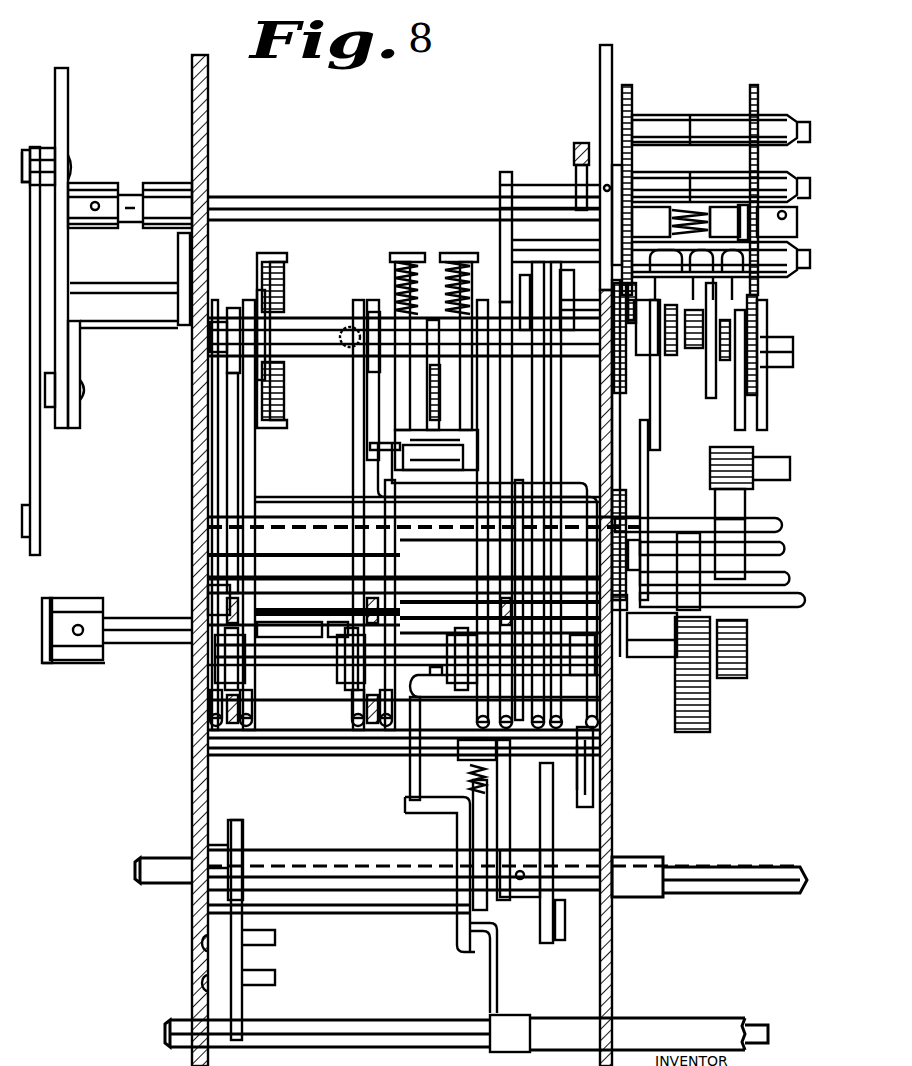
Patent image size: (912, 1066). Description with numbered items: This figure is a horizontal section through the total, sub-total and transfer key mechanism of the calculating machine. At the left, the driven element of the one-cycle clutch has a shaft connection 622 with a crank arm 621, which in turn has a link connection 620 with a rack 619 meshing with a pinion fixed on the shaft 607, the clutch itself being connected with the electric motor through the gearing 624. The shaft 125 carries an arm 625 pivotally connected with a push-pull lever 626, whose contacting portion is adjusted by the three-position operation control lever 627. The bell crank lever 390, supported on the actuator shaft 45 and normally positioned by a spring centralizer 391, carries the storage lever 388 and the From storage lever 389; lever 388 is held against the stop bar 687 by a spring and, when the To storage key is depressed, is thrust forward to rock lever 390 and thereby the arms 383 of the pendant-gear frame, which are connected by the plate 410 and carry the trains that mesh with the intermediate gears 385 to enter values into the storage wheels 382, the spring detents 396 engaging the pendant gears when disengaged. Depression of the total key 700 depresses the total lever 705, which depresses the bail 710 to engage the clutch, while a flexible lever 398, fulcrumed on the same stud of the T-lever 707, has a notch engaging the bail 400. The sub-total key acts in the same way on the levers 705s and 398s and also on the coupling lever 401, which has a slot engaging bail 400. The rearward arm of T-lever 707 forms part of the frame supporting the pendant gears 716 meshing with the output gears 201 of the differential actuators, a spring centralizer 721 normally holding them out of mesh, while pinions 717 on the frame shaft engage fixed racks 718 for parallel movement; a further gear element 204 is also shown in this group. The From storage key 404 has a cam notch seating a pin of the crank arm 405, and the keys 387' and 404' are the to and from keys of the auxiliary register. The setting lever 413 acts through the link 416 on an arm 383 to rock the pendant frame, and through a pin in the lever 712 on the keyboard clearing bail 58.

The rack 619 is at (75, 98).
The link connection 620 is at (38, 452).
The crank arm 621 is at (50, 580).
The shaft connection 622 is at (145, 633).
The shaft 607 is at (413, 200).
The T-lever 707 is at (500, 232).
The fixed racks 718 is at (575, 165).
The pinions 717 is at (578, 225).
The pendant gears 716 is at (635, 162).
The output gears 201 is at (630, 395).
The gear 204 is at (643, 367).
The bell crank lever 390 is at (370, 300).
The From storage lever 389 is at (387, 382).
The spring centralizer 391 is at (395, 265).
The spring centralizer 721 is at (478, 275).
The coupling lever 401 is at (528, 290).
The actuator shaft 45 is at (570, 330).
The sub-total flexible lever 398s is at (547, 372).
The sub-total lever 705s is at (560, 412).
The storage lever 388 is at (358, 456).
The bail 400 is at (278, 560).
The stop bar 687 is at (308, 520).
The arms 383 is at (578, 493).
The total lever 705 is at (497, 565).
The flexible lever 398 is at (480, 565).
The to key for auxiliary register 387' is at (253, 646).
The crank arm 405 is at (360, 672).
The From storage key 404 is at (404, 722).
The auxiliary register from key 404' is at (183, 708).
The total key 700 is at (515, 728).
The bail 710 is at (407, 770).
The lever 712 is at (458, 828).
The push-pull lever 626 is at (490, 820).
The arm 625 is at (500, 850).
The setting lever 413 is at (545, 940).
The link 416 is at (560, 940).
The operation control lever 627 is at (212, 830).
The shaft 125 is at (147, 858).
The keyboard clearing bail 58 is at (665, 1018).
The gearing 624 is at (715, 462).
The intermediate gear 385 is at (627, 497).
The plate 410 is at (705, 540).
The spring detents 396 is at (625, 655).
The storage wheels 382 is at (639, 652).